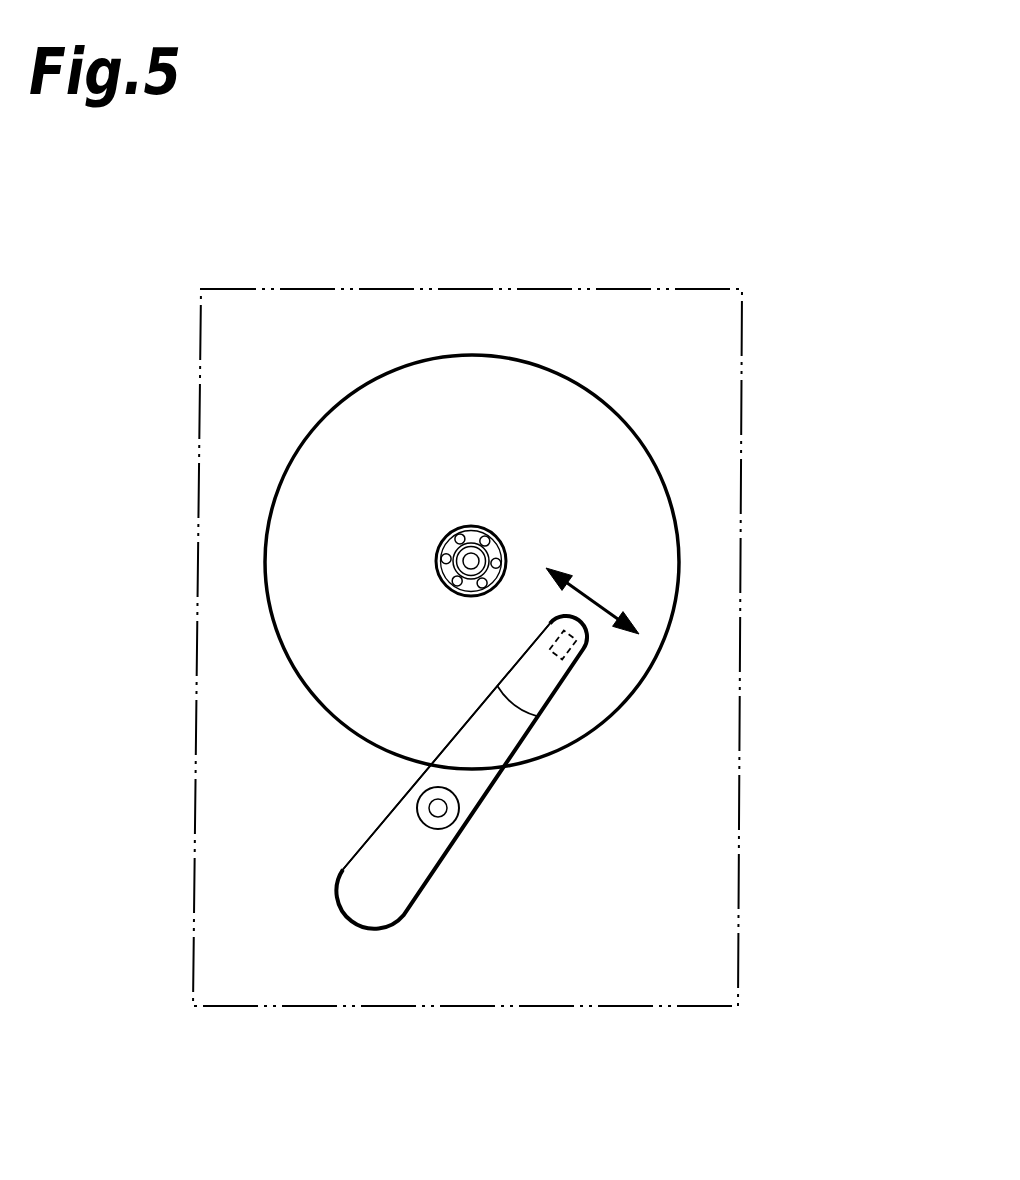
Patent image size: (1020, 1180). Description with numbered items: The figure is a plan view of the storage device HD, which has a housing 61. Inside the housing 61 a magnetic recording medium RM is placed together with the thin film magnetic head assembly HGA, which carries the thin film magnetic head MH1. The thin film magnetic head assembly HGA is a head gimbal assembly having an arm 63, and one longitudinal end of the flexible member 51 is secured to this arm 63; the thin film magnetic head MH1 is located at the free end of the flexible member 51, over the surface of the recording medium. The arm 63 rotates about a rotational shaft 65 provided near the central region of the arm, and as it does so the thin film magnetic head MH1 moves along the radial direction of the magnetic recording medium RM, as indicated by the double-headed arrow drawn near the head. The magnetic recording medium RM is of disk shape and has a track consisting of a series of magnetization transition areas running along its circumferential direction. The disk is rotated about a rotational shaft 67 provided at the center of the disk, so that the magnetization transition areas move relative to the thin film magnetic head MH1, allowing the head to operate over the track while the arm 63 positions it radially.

The storage device HD is at (817, 315).
The housing 61 is at (741, 883).
The magnetic recording medium RM is at (655, 457).
The rotational shaft 67 is at (471, 553).
The thin film magnetic head assembly HGA is at (487, 852).
The arm 63 is at (362, 856).
The rotational shaft 65 is at (440, 807).
The flexible member 51 is at (553, 692).
The thin film magnetic head MH1 is at (580, 652).